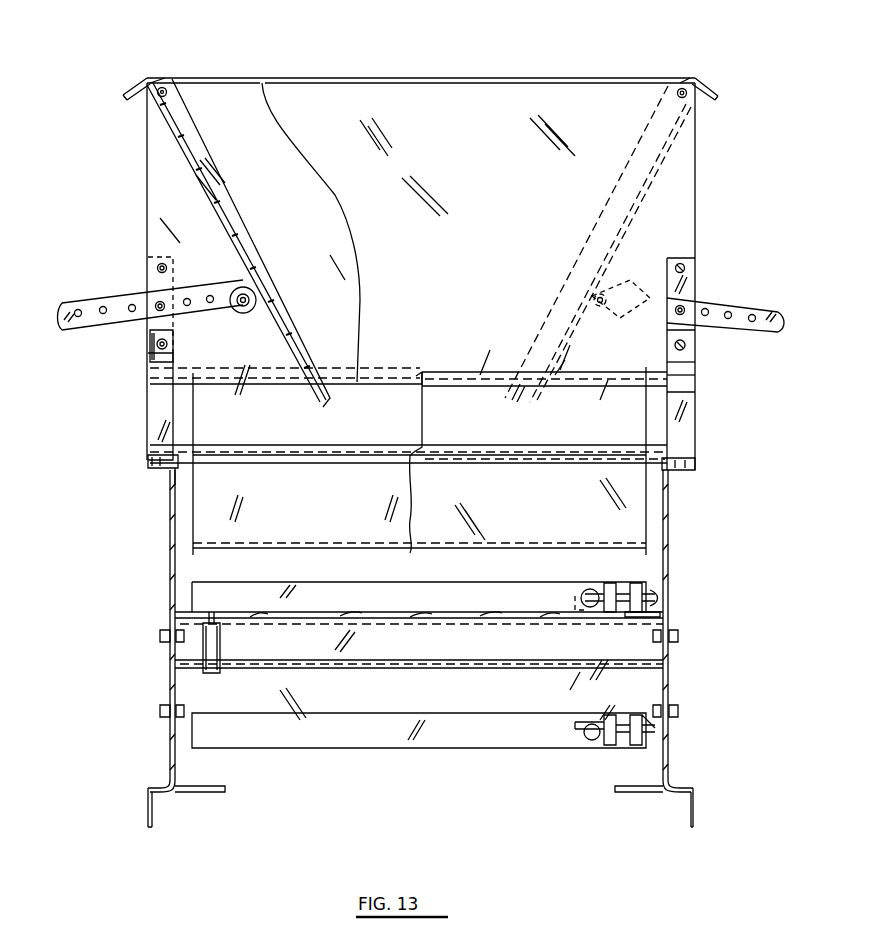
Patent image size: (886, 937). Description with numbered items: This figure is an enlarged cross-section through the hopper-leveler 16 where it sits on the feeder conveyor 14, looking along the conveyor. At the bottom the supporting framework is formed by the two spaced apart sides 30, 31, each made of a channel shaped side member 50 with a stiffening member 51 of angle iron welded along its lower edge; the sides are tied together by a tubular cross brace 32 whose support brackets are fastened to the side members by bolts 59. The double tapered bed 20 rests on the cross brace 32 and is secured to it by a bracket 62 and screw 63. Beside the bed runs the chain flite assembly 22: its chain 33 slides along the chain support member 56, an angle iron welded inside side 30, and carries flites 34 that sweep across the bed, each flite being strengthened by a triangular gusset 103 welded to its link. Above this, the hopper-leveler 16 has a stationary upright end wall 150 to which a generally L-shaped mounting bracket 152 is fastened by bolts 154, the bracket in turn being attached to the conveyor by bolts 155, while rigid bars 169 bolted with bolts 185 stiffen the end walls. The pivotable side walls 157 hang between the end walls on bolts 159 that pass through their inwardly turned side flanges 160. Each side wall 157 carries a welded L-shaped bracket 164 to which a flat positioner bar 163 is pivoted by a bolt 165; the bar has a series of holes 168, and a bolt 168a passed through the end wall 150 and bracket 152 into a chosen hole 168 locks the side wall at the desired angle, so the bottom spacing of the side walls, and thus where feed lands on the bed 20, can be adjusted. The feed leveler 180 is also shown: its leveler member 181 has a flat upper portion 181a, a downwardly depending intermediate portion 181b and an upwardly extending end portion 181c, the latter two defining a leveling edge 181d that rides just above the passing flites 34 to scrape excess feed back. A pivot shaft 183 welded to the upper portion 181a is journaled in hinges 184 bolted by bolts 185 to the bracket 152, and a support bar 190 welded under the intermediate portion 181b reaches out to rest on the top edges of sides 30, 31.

The feeder conveyor 14 is at (672, 690).
The hopper-leveler 16 is at (528, 72).
The double tapered bed 20 is at (312, 612).
The chain flite assembly 22 is at (604, 748).
The side 30 is at (668, 533).
The side 31 is at (168, 535).
The cross brace 32 is at (398, 670).
The chain 33 is at (622, 583).
The flite 34 is at (430, 583).
The side member 50 is at (178, 778).
The stiffening member 51 is at (170, 790).
The chain support member 56 is at (668, 600).
The bolt 59 is at (160, 636).
The bracket 62 is at (212, 675).
The screw 63 is at (212, 612).
The gusset 103 is at (575, 596).
The end wall 150 is at (425, 78).
The mounting bracket 152 is at (158, 423).
The bolt 154 is at (157, 268).
The bolt 155 is at (150, 458).
The side wall 157 is at (205, 140).
The bolt 159 is at (166, 89).
The side flange 160 is at (205, 152).
The positioner bar 163 is at (78, 303).
The L-shaped bracket 164 is at (245, 288).
The bolt 165 is at (246, 310).
The hole 168 is at (78, 316).
The bolt 168a is at (156, 311).
The rigid bar 169 is at (158, 357).
The feed leveler 180 is at (640, 425).
The leveler member 181 is at (480, 372).
The upper portion 181a is at (568, 372).
The intermediate portion 181b is at (385, 421).
The end portion 181c is at (246, 446).
The leveling edge 181d is at (262, 549).
The pivot shaft 183 is at (425, 370).
The hinge 184 is at (688, 376).
The bolt 185 is at (168, 344).
The support bar 190 is at (690, 462).